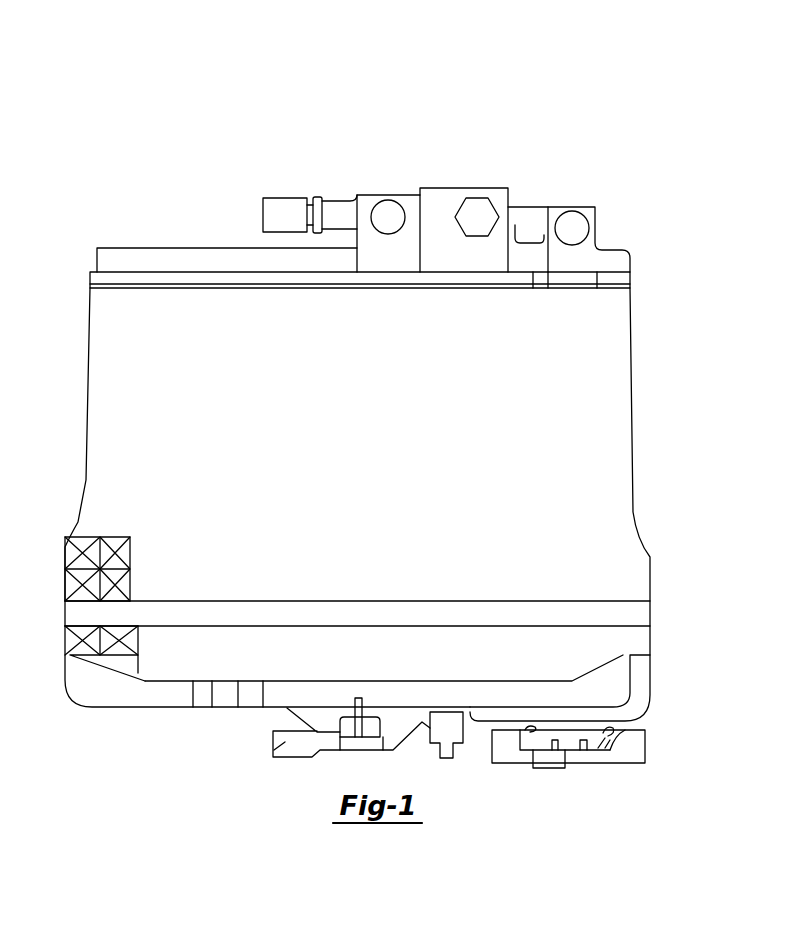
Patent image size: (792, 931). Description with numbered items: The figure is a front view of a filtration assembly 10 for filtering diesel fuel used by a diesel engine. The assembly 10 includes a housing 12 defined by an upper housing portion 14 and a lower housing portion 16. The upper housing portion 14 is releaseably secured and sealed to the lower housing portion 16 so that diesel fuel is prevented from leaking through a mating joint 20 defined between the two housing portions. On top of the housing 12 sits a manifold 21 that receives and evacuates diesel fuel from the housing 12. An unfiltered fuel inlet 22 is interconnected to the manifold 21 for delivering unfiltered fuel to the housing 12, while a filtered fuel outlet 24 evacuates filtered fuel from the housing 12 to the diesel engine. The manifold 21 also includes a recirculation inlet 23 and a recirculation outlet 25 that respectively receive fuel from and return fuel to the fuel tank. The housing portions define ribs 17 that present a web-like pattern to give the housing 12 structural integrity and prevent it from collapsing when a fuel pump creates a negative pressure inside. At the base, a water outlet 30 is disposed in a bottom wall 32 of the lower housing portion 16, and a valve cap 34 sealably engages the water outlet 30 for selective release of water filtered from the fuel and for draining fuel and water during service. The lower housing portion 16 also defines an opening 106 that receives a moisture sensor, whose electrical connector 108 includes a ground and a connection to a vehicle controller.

The filtration assembly 10 is at (90, 152).
The housing 12 is at (55, 390).
The upper housing portion 14 is at (633, 425).
The lower housing portion 16 is at (652, 656).
The ribs 17 is at (130, 548).
The mating joint 20 is at (652, 627).
The manifold 21 is at (427, 187).
The unfiltered fuel inlet 22 is at (477, 205).
The recirculation inlet 23 is at (311, 198).
The filtered fuel outlet 24 is at (575, 220).
The recirculation outlet 25 is at (383, 205).
The water outlet 30 is at (612, 728).
The bottom wall 32 is at (470, 722).
The valve cap 34 is at (577, 763).
The opening 106 is at (343, 748).
The electrical connector 108 is at (276, 760).